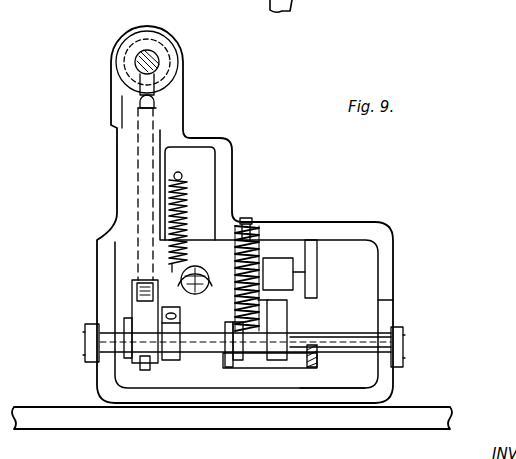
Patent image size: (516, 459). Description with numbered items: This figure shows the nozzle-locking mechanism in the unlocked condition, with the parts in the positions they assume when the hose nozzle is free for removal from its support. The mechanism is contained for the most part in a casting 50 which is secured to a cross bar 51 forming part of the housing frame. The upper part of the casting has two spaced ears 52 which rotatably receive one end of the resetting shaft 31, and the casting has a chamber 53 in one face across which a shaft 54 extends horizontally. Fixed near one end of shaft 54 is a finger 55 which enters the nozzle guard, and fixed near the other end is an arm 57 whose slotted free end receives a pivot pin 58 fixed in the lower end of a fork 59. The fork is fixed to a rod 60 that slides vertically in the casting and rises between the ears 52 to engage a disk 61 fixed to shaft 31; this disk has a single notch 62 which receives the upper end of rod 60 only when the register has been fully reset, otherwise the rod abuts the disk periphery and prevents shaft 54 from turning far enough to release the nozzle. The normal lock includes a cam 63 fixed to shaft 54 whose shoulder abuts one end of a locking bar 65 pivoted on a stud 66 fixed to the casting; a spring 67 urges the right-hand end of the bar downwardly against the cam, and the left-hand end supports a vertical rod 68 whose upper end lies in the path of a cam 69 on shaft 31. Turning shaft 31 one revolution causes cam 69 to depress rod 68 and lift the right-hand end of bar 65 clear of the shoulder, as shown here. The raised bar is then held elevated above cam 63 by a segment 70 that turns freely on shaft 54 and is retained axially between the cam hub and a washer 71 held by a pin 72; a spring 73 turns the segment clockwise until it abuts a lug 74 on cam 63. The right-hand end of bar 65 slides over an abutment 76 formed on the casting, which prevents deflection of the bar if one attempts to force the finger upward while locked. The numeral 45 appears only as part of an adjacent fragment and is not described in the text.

The resetting shaft 31 is at (155, 60).
The fragment element 45 is at (310, 2).
The casting 50 is at (320, 224).
The cross bar 51 is at (66, 413).
The ears 52 is at (184, 97).
The chamber 53 is at (370, 300).
The shaft 54 is at (356, 344).
The finger 55 is at (320, 356).
The arm 57 is at (144, 372).
The pivot pin 58 is at (173, 364).
The fork 59 is at (136, 312).
The rod 60 is at (158, 108).
The disk 61 is at (174, 70).
The notch 62 is at (142, 101).
The cam 63 is at (290, 314).
The locking bar 65 is at (318, 257).
The stud 66 is at (222, 262).
The spring 67 is at (184, 226).
The vertical rod 68 is at (150, 106).
The cam 69 is at (150, 28).
The segment 70 is at (250, 366).
The washer 71 is at (240, 364).
The pin 72 is at (227, 362).
The spring 73 is at (262, 304).
The lug 74 is at (265, 320).
The abutment 76 is at (300, 280).